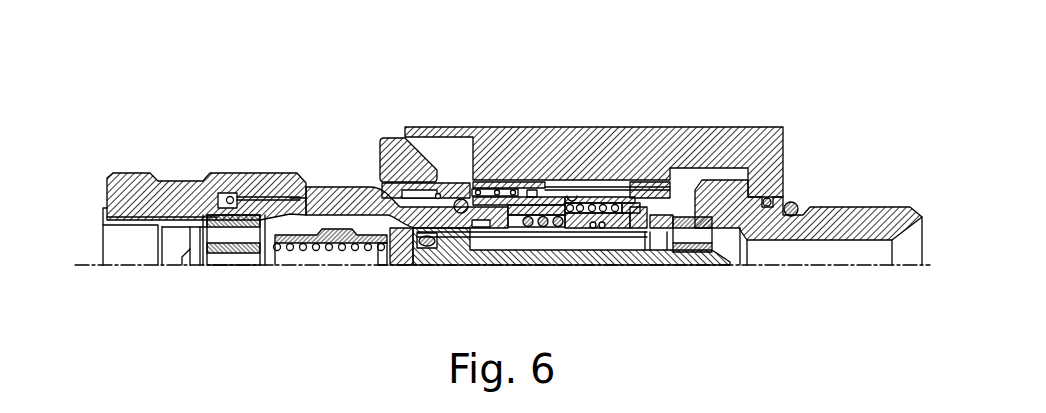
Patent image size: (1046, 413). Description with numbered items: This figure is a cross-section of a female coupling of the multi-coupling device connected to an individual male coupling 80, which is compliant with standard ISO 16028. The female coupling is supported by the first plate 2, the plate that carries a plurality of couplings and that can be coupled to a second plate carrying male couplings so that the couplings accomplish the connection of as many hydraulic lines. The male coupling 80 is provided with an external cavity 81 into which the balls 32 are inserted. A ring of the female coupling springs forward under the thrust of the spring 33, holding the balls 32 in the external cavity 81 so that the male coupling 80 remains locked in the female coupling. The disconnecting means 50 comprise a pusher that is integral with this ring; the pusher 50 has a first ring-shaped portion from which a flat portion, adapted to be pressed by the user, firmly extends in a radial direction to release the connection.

The first plate 2 is at (650, 150).
The balls 32 is at (450, 182).
The spring 33 is at (500, 189).
The disconnecting means 50 is at (393, 151).
The individual male coupling 80 is at (142, 174).
The external cavity 81 is at (445, 244).